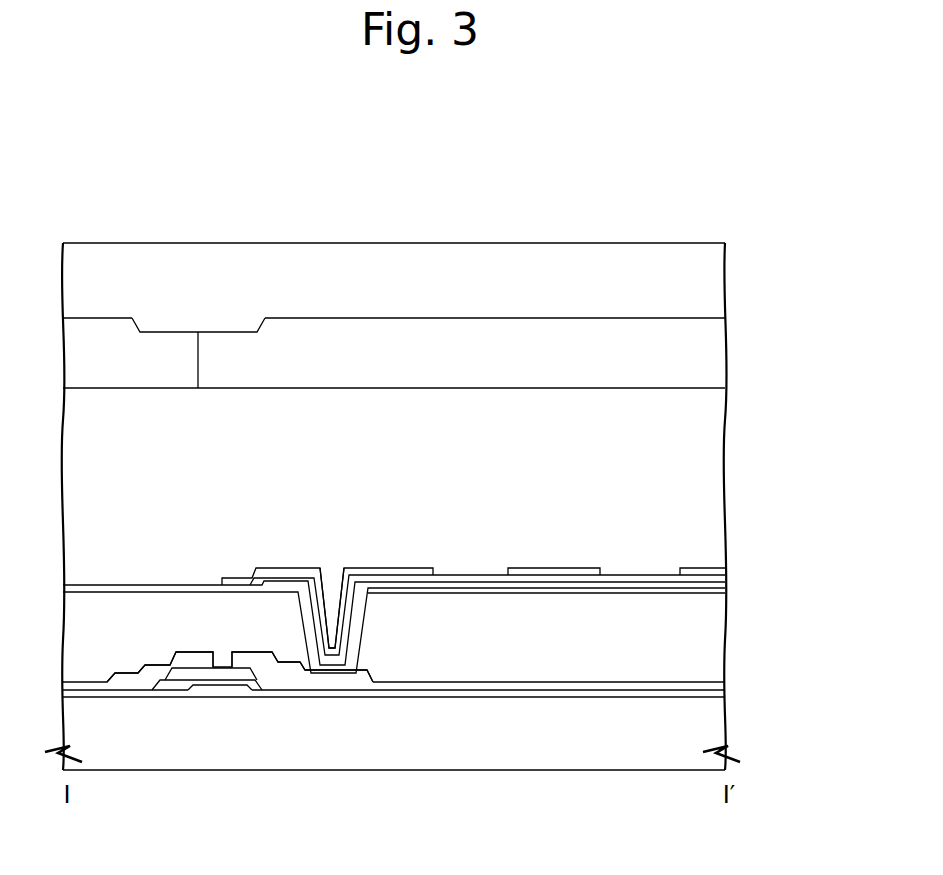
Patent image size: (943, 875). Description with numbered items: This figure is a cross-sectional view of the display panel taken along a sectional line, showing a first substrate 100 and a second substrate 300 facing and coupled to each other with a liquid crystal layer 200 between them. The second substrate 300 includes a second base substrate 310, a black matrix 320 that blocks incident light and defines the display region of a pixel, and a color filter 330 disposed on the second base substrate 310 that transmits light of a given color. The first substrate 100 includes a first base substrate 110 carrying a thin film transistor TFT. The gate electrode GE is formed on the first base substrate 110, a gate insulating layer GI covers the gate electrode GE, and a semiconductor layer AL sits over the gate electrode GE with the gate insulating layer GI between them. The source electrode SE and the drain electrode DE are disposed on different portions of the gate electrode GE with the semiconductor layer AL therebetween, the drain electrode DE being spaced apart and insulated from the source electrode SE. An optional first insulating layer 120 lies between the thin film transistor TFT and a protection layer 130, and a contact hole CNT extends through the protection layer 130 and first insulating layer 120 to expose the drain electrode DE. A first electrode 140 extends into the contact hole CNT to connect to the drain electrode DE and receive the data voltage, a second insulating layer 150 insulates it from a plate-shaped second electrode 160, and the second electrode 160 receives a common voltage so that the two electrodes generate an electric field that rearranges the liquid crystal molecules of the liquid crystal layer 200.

The first substrate 100 is at (460, 638).
The first base substrate 110 is at (708, 732).
The first insulating layer 120 is at (708, 684).
The protection layer 130 is at (708, 636).
The first electrode 140 is at (712, 592).
The second insulating layer 150 is at (712, 582).
The second electrode 160 is at (714, 572).
The liquid crystal layer 200 is at (710, 486).
The second substrate 300 is at (394, 264).
The second base substrate 310 is at (313, 250).
The black matrix 320 is at (205, 330).
The color filter 330 is at (145, 283).
The contact hole CNT is at (331, 576).
The thin film transistor TFT is at (234, 763).
The source electrode SE is at (133, 684).
The semiconductor layer AL is at (167, 684).
The gate insulating layer GI is at (205, 686).
The gate electrode GE is at (223, 693).
The drain electrode DE is at (302, 744).